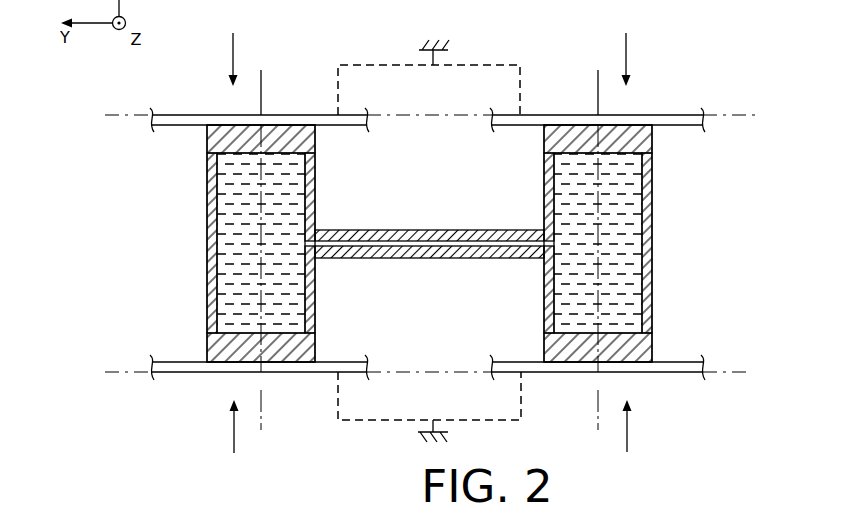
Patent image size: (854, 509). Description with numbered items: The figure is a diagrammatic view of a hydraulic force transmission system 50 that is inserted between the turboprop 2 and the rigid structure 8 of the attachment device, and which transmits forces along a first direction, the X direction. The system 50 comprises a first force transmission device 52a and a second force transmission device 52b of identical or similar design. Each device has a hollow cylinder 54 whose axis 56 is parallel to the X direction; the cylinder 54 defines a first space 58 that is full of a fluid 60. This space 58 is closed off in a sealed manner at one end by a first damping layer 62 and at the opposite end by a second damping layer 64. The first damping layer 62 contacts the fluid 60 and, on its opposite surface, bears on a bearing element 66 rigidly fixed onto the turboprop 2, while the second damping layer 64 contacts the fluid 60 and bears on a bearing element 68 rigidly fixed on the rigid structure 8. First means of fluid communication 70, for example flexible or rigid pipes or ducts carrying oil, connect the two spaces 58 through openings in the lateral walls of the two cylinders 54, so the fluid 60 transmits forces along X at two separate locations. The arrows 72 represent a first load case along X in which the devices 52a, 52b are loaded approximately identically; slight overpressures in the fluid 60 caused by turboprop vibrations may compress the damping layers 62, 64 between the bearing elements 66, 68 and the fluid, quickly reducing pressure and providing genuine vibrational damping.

The turboprop 2 is at (433, 63).
The rigid structure 8 is at (368, 423).
The force transmission system 50 is at (146, 222).
The first force transmission device 52a is at (667, 199).
The second force transmission device 52b is at (196, 199).
The hollow cylinder 54 is at (316, 169).
The axis 56 is at (262, 86).
The first space 58 is at (308, 206).
The fluid 60 is at (429, 243).
The first damping layer 62 is at (210, 142).
The second damping layer 64 is at (312, 350).
The bearing element of the turboprop 66 is at (175, 116).
The bearing element of the rigid structure 68 is at (175, 363).
The first means of fluid communication 70 is at (420, 230).
The arrows 72 is at (233, 53).